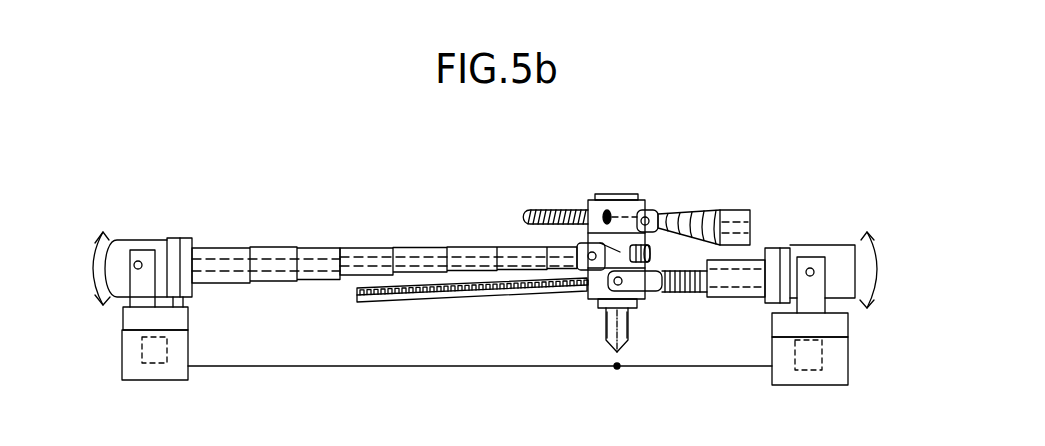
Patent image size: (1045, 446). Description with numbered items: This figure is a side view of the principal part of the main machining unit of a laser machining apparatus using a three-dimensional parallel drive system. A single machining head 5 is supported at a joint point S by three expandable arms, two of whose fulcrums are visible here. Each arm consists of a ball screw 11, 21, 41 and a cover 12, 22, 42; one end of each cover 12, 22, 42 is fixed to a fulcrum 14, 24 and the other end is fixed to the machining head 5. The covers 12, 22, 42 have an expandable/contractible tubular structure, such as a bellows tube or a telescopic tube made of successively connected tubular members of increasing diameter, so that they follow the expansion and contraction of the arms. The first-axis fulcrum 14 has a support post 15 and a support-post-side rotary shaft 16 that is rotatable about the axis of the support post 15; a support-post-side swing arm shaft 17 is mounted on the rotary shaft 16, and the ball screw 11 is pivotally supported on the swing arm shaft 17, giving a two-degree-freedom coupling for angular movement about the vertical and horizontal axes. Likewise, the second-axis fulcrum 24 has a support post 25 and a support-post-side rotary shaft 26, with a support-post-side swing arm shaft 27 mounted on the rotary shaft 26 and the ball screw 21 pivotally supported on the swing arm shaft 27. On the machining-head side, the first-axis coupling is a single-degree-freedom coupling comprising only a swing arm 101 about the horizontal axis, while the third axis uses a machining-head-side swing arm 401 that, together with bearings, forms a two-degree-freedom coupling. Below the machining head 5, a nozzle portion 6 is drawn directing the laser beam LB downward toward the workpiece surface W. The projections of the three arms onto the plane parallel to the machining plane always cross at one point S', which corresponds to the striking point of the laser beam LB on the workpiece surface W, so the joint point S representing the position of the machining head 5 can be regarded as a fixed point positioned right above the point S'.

The machining head 5 is at (649, 191).
The probe tip 6 is at (627, 332).
The ball screw 11 is at (420, 303).
The cover 12 is at (730, 292).
The first-axis fulcrum 14 is at (839, 235).
The support post 15 is at (830, 370).
The support-post-side rotary shaft 16 is at (828, 325).
The support-post-side swing arm shaft 17 is at (815, 274).
The ball screw 21 is at (377, 257).
The cover 22 is at (292, 248).
The second-axis fulcrum 24 is at (119, 221).
The support post 25 is at (140, 373).
The support-post-side rotary shaft 26 is at (138, 320).
The support-post-side swing arm shaft 27 is at (138, 261).
The ball screw 41 is at (575, 209).
The cover 42 is at (750, 208).
The swing arm 101 is at (648, 287).
The machining-head-side swing arm 401 is at (660, 211).
The joint point S is at (542, 220).
The crossing point S' is at (582, 398).
The laser beam LB is at (605, 317).
The workpiece surface W is at (287, 364).